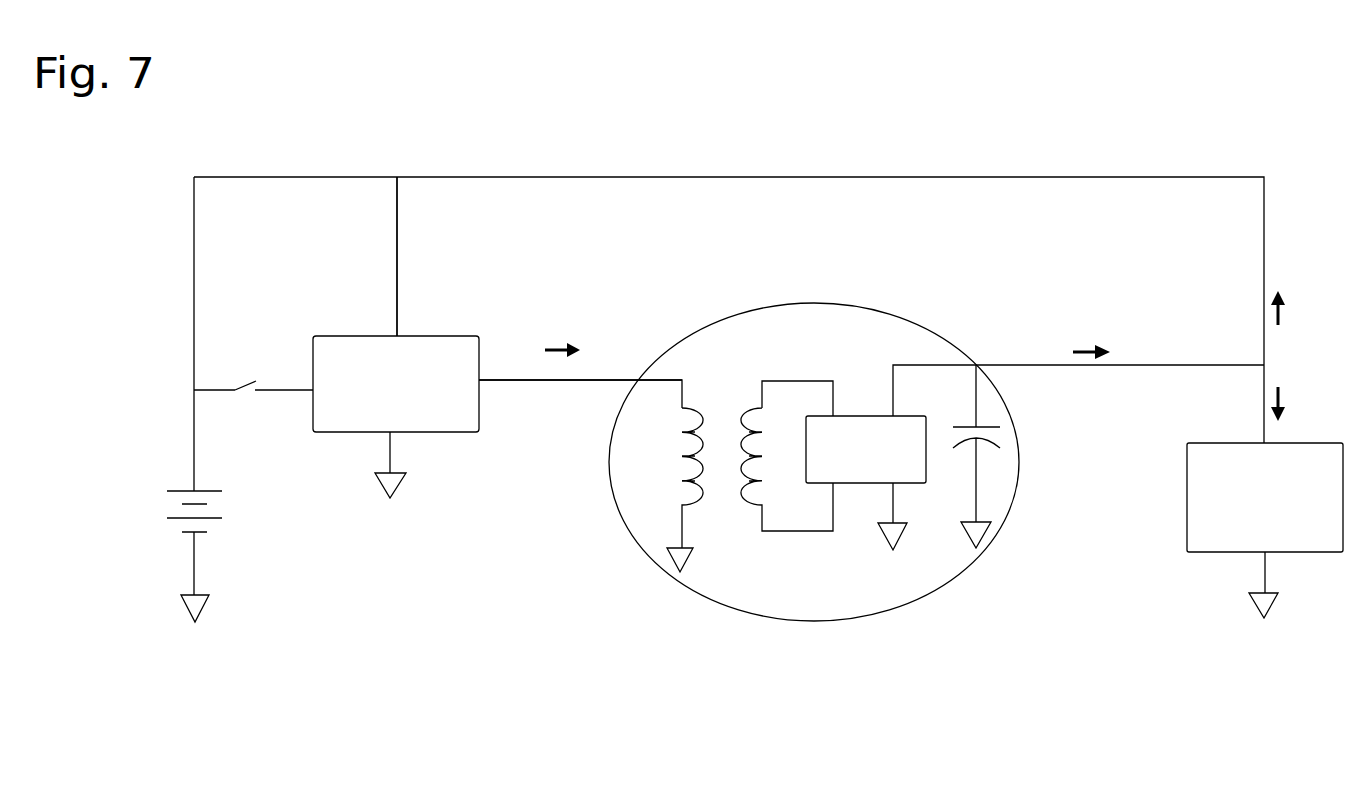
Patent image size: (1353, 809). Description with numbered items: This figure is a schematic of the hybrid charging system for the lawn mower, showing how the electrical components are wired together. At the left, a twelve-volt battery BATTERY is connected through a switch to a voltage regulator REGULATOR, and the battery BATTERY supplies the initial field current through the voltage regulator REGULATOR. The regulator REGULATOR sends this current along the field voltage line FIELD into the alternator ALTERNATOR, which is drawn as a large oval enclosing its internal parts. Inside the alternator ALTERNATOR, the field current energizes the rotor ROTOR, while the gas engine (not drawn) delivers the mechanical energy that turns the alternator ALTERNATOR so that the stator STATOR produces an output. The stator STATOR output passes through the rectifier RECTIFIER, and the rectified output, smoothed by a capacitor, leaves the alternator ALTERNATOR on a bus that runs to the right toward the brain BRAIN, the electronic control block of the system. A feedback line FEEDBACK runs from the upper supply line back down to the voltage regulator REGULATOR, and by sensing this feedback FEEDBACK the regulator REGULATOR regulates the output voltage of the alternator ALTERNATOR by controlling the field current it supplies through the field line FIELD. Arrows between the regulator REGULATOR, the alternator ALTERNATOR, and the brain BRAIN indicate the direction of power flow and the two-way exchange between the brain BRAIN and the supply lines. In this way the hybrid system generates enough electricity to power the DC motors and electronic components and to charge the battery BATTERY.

The battery BATTERY is at (219, 545).
The rotor ROTOR is at (707, 517).
The stator STATOR is at (870, 517).
The alternator ALTERNATOR is at (814, 441).
The rectifier RECTIFIER is at (866, 483).
The brain BRAIN is at (1265, 530).
The voltage regulator REGULATOR is at (396, 417).
The feedback line FEEDBACK is at (450, 256).
The field voltage line FIELD is at (580, 411).